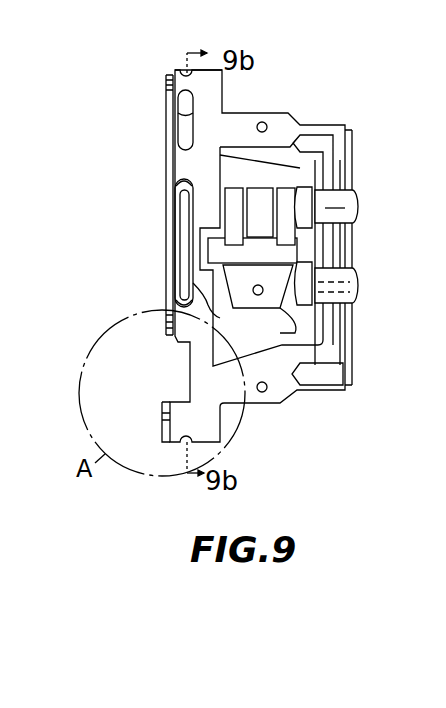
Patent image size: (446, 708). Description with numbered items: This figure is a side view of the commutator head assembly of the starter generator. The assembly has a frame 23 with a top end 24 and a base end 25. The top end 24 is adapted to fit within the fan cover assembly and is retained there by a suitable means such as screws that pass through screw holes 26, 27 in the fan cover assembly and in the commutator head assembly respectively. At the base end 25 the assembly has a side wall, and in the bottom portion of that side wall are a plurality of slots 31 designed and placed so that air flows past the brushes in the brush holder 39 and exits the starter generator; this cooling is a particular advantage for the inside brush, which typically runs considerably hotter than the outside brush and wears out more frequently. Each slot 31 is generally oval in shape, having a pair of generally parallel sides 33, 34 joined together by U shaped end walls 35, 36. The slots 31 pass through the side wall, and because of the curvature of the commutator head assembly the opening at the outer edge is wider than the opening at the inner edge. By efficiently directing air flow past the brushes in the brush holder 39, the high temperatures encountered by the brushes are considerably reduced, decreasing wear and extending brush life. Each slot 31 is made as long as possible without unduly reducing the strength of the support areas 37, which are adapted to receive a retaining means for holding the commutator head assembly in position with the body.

The frame 23 is at (257, 410).
The top end 24 is at (323, 121).
The base end 25 is at (168, 256).
The screw hole 26 is at (267, 391).
The screw hole 27 is at (264, 122).
The slot 31 is at (186, 214).
The parallel side 33 is at (175, 285).
The parallel side 34 is at (220, 317).
The U shaped end wall 35 is at (176, 180).
The U shaped end wall 36 is at (172, 338).
The support area 37 is at (193, 158).
The brush holder 39 is at (327, 325).